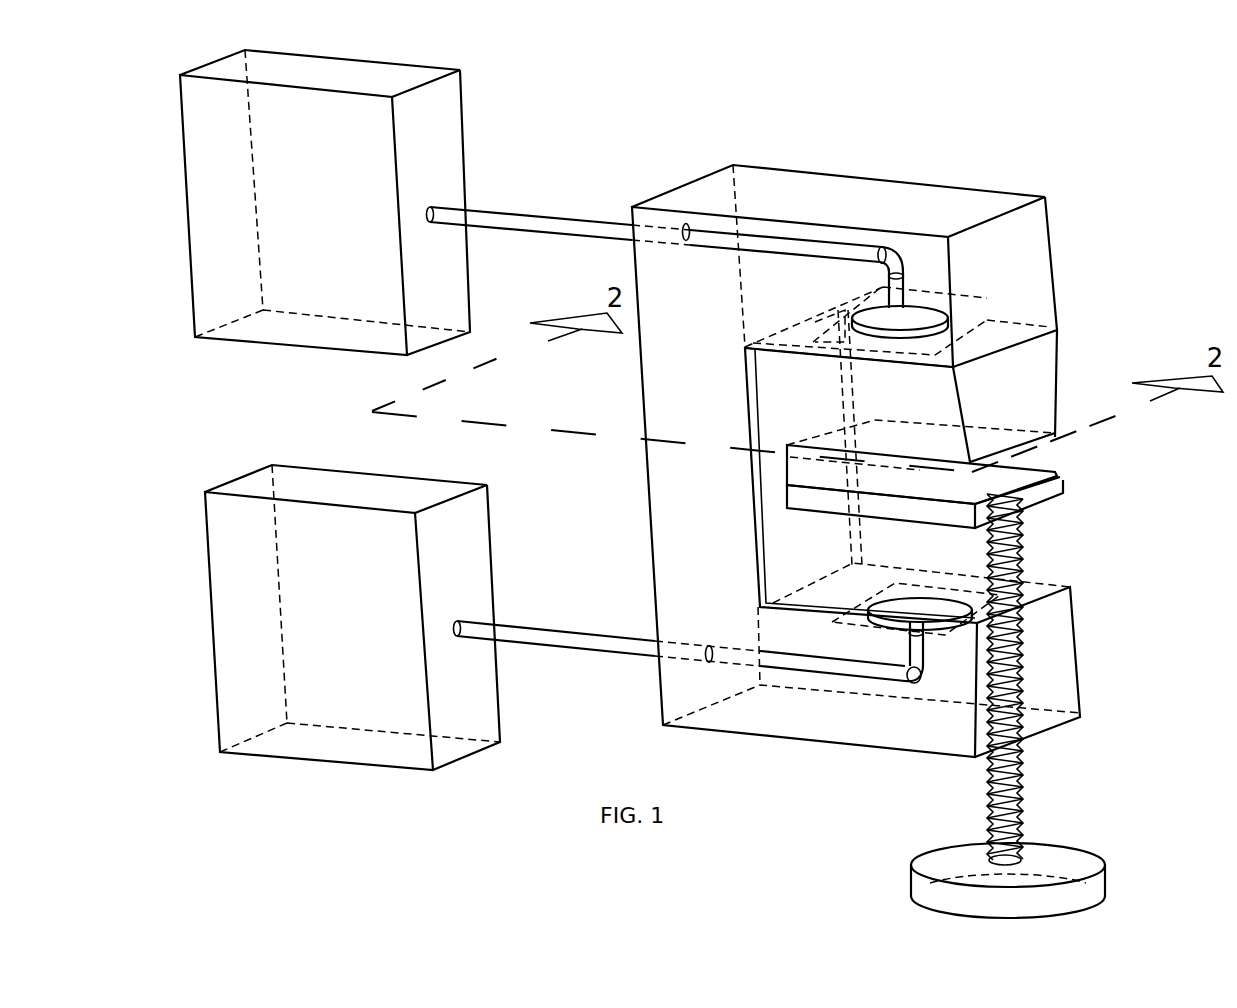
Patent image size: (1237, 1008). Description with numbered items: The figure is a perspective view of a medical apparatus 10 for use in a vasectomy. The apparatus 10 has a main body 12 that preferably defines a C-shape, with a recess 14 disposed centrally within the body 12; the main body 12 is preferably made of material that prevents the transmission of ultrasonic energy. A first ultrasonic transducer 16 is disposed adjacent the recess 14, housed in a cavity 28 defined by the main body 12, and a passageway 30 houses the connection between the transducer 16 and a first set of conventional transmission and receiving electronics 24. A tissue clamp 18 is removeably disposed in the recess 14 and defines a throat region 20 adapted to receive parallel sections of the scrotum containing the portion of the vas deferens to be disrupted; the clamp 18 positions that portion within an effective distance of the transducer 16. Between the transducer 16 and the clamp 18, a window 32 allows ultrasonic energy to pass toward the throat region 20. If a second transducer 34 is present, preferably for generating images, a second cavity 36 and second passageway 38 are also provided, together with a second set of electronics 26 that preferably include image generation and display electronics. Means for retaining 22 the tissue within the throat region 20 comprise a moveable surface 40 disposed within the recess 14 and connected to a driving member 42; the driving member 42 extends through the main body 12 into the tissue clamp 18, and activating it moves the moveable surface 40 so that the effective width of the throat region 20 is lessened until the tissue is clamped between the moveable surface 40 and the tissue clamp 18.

The medical apparatus 10 is at (792, 529).
The main body 12 is at (877, 453).
The recess 14 is at (1050, 340).
The first ultrasonic transducer 16 is at (925, 303).
The tissue clamp 18 is at (1038, 385).
The throat region 20 is at (1040, 455).
The means for retaining 22 is at (1027, 752).
The first set of transmission and receiving electronics 24 is at (183, 196).
The second set of transmission and receiving electronics 26 is at (208, 615).
The cavity 28 is at (828, 333).
The passageway 30 is at (783, 243).
The window 32 is at (934, 355).
The second transducer 34 is at (928, 603).
The second cavity 36 is at (836, 634).
The second passageway 38 is at (807, 667).
The moveable surface 40 is at (1055, 493).
The driving member 42 is at (1027, 788).